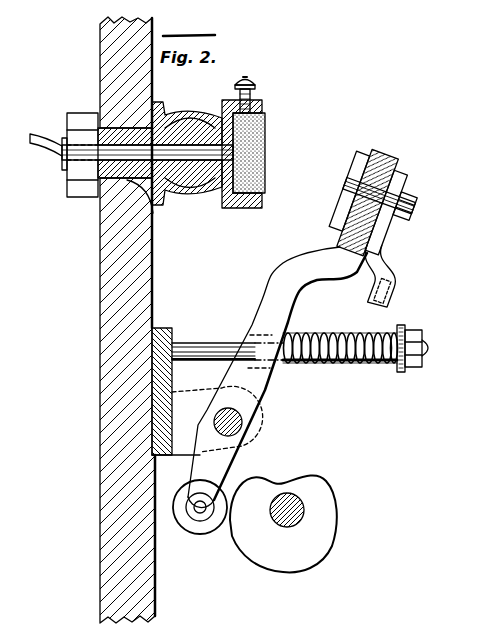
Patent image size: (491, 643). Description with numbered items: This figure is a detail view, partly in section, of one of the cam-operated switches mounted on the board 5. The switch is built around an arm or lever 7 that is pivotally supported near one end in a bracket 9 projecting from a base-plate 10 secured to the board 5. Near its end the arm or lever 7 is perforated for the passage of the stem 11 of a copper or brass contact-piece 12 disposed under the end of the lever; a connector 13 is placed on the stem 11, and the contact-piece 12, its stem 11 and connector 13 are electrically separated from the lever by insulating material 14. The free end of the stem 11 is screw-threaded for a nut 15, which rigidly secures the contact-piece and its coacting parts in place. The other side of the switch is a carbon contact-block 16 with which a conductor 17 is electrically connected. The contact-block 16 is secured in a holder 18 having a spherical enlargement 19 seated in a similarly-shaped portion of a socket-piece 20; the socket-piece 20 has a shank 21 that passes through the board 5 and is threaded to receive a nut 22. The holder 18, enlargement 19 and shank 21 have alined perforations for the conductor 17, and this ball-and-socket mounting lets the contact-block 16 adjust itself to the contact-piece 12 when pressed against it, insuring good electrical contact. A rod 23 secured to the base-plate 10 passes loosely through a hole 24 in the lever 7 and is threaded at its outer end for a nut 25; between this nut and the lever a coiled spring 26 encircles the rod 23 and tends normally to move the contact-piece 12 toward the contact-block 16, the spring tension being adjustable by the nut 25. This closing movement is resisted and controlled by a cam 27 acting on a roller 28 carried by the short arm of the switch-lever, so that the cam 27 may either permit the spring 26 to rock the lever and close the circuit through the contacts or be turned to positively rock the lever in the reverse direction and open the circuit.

The board 5 is at (117, 320).
The arm or lever 7 is at (277, 377).
The bracket 9 is at (207, 420).
The base-plate 10 is at (173, 385).
The stem 11 is at (370, 168).
The contact-piece 12 is at (324, 158).
The connector 13 is at (395, 281).
The insulating material 14 is at (380, 160).
The nut 15 is at (397, 190).
The carbon contact-block 16 is at (264, 139).
The conductor 17 is at (53, 143).
The holder 18 is at (222, 104).
The spherical enlargement 19 is at (214, 184).
The socket-piece 20 is at (192, 120).
The shank 21 is at (155, 214).
The nut 22 is at (72, 191).
The rod 23 is at (227, 339).
The hole 24 is at (256, 328).
The nut 25 is at (418, 334).
The coiled spring 26 is at (352, 363).
The cam 27 is at (340, 516).
The roller 28 is at (199, 528).